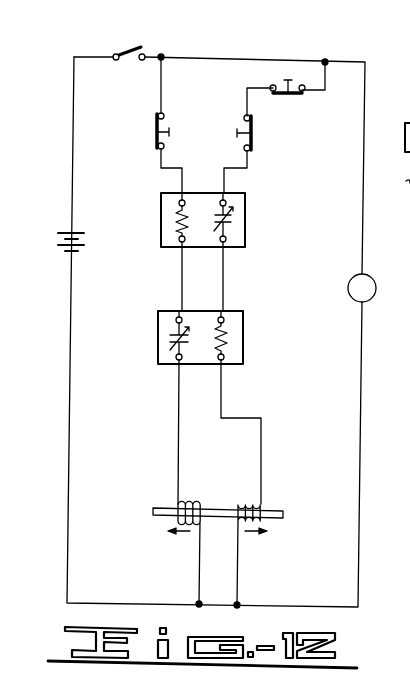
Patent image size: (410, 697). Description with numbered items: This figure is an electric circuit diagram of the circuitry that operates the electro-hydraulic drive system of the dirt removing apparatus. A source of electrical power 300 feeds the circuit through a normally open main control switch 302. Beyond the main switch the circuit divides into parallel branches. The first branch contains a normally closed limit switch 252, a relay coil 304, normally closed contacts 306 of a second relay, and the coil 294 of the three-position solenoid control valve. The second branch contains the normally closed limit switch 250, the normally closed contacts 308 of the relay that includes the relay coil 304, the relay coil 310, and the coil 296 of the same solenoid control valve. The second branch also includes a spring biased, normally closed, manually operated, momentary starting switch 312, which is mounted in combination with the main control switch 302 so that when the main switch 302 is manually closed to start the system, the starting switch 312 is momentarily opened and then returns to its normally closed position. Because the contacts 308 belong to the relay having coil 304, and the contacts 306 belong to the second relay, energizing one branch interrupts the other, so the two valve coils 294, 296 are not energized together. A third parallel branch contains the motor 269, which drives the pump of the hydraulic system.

The source of electrical power 300 is at (66, 246).
The main control switch 302 is at (133, 50).
The momentary starting switch 312 is at (281, 86).
The limit switch 252 is at (155, 132).
The limit switch 250 is at (257, 133).
The relay coil 304 is at (172, 222).
The normally closed contacts 308 is at (246, 222).
The normally closed contacts 306 is at (168, 339).
The relay coil 310 is at (223, 336).
The coil 294 is at (183, 501).
The coil 296 is at (258, 501).
The motor 269 is at (370, 280).